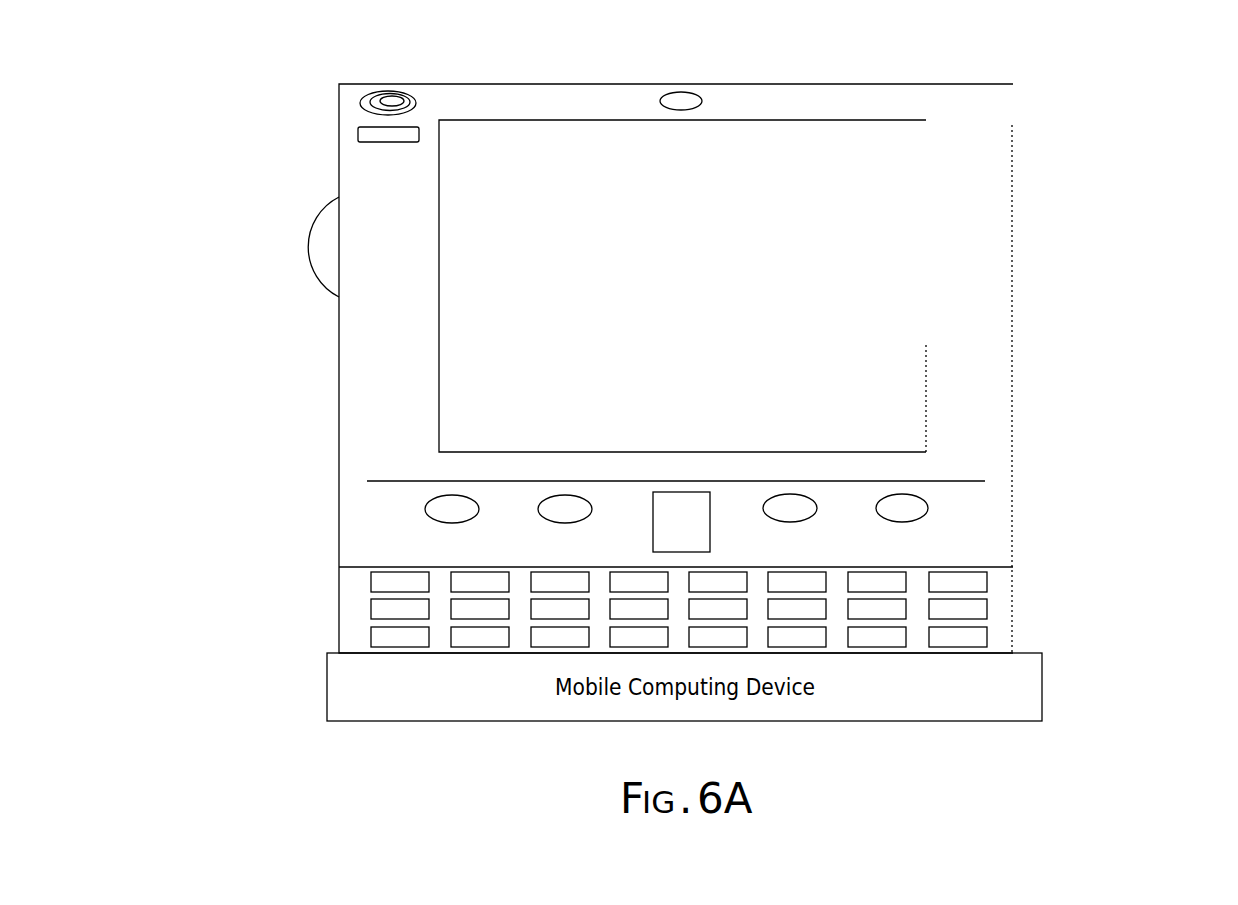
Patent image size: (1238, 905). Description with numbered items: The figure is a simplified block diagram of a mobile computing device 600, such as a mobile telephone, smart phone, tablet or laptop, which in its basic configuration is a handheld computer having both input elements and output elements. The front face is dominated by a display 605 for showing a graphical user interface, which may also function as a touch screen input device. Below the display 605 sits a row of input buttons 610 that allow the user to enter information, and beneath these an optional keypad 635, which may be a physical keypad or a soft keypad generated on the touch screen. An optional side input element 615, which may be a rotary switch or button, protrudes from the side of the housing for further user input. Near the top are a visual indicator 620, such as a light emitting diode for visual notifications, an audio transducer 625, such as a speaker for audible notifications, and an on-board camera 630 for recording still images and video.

The mobile computing device 600 is at (997, 98).
The display 605 is at (587, 395).
The input buttons 610 is at (680, 525).
The side input element 615 is at (324, 248).
The visual indicator 620 is at (358, 139).
The audio transducer 625 is at (360, 103).
The on-board camera 630 is at (702, 100).
The keypad 635 is at (347, 643).